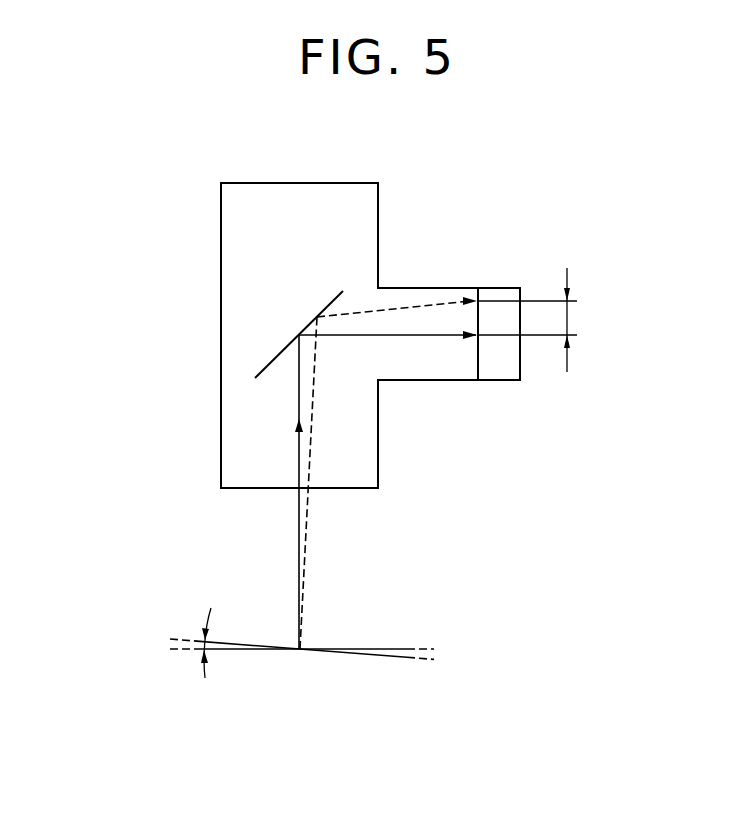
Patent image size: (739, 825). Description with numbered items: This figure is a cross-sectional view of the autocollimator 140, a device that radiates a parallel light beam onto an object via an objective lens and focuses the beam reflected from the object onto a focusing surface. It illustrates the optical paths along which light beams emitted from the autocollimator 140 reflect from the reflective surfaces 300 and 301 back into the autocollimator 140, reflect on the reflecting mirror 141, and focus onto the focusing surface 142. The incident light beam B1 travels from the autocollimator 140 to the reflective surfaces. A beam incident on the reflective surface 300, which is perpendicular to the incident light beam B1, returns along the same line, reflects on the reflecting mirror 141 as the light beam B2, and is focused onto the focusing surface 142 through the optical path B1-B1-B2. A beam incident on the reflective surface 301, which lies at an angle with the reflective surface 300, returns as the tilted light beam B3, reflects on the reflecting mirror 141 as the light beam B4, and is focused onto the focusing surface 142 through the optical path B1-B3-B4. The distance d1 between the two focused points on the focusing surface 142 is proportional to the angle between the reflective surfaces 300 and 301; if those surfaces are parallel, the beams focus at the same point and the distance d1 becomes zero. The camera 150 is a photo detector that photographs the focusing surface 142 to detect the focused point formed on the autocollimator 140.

The autocollimator 140 is at (190, 198).
The reflecting mirror 141 is at (273, 359).
The focusing surface 142 is at (478, 362).
The camera 150 is at (530, 274).
The reflective surface 300 is at (397, 645).
The reflective surface 301 is at (375, 657).
The incident light beam B1 is at (298, 512).
The light beam B2 is at (428, 338).
The light beam B3 is at (307, 540).
The light beam B4 is at (422, 305).
The distance between two focused points d1 is at (527, 320).